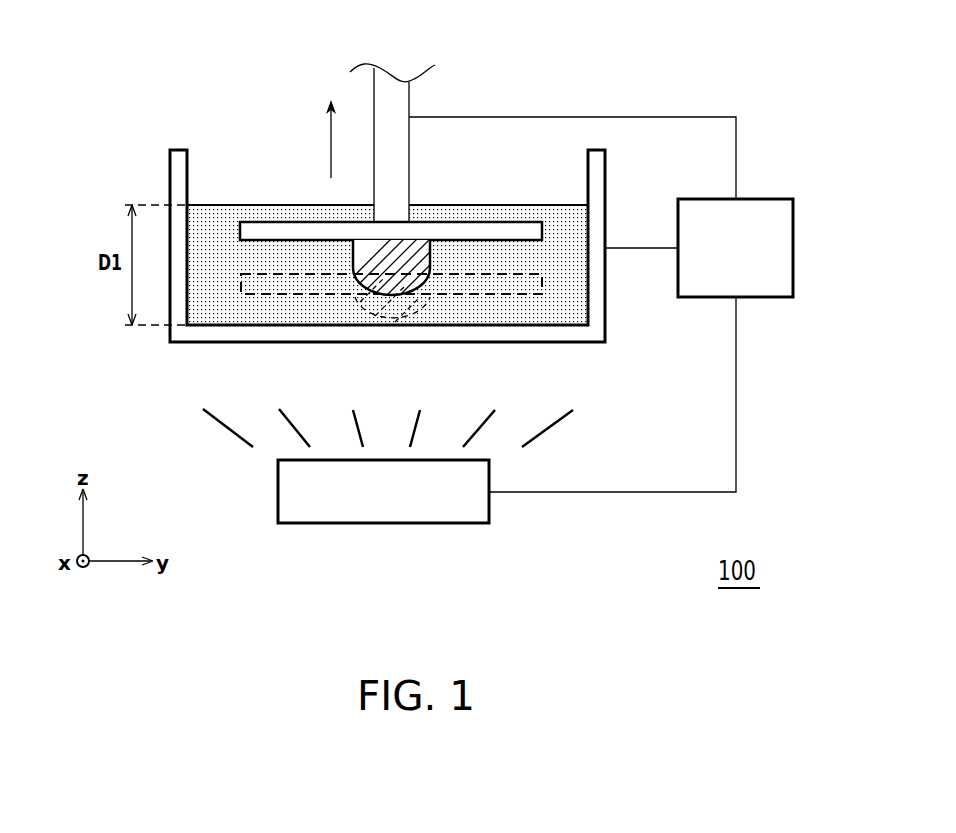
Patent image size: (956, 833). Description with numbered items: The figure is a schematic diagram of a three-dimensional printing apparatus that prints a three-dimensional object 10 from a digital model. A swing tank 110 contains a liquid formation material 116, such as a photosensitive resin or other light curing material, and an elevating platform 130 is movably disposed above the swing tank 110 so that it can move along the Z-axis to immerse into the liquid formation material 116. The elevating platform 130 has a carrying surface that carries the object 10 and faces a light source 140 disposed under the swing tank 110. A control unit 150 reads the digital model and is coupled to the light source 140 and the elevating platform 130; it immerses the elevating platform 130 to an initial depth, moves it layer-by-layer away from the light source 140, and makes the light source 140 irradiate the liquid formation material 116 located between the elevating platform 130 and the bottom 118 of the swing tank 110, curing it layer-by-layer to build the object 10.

The swing tank 110 is at (598, 187).
The liquid formation material 116 is at (576, 221).
The bottom 118 is at (549, 325).
The elevating platform 130 is at (487, 222).
The 3D object 10 is at (418, 262).
The light source 140 is at (277, 492).
The control unit 150 is at (758, 199).